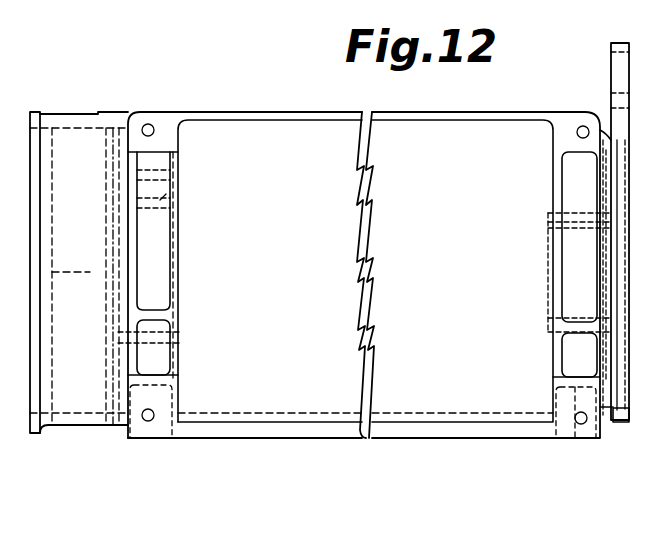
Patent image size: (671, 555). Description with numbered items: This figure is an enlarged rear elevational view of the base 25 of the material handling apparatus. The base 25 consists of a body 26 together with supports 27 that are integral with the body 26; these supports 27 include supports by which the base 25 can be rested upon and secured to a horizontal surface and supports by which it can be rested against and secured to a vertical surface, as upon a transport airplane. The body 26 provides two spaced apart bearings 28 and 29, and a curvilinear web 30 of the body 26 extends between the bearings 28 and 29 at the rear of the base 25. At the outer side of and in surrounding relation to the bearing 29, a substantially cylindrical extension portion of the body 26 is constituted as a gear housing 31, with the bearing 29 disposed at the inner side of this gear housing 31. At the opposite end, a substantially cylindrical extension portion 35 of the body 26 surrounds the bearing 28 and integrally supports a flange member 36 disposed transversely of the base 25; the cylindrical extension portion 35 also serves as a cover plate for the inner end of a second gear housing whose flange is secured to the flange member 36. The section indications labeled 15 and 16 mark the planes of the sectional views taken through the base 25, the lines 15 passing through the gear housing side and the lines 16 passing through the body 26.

The section line 15- 15 is at (148, 162).
The section line 16- 16 is at (263, 112).
The base 25 is at (440, 398).
The body 26 is at (347, 398).
The supports 27 is at (580, 435).
The bearing 28 is at (573, 331).
The bearing 29 is at (178, 190).
The curvilinear web 30 is at (397, 398).
The gear housing 31 is at (77, 422).
The cylindrical extension portion 35 is at (612, 416).
The flange member 36 is at (611, 46).